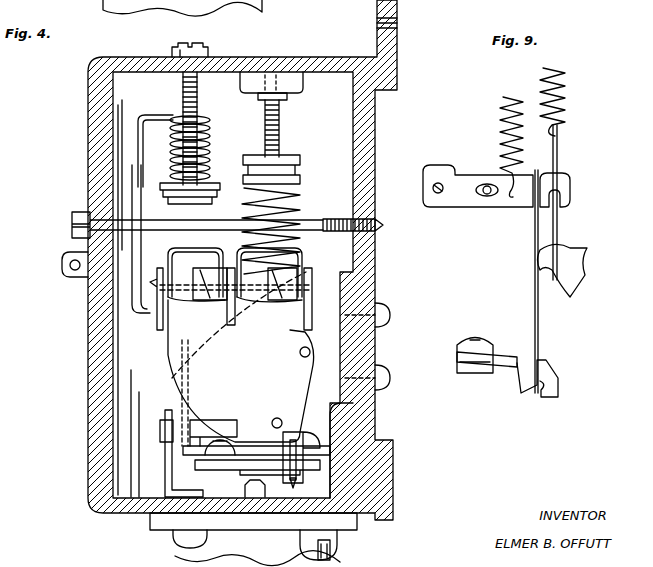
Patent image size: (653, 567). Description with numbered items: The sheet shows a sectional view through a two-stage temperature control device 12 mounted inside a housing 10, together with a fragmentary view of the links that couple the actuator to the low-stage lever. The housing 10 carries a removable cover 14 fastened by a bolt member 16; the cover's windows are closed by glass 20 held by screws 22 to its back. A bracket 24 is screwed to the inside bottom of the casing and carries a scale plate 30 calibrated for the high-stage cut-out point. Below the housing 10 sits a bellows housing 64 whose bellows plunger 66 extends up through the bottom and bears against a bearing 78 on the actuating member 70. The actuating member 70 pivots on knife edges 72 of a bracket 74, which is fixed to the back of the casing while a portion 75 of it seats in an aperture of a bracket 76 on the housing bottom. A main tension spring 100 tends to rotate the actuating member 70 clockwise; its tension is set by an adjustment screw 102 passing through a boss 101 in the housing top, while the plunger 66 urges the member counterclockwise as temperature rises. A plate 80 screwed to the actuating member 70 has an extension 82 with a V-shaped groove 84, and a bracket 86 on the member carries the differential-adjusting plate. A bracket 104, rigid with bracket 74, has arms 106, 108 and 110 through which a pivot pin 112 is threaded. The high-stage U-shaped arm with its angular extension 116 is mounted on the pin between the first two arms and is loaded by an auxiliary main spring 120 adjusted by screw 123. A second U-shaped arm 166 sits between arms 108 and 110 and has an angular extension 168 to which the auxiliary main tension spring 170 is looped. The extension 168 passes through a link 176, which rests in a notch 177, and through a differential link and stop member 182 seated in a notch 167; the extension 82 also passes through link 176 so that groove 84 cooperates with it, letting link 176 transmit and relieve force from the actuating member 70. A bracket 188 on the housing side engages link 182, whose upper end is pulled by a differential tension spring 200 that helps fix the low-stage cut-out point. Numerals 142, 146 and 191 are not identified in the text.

In FIG. 4, the housing 10 is at (95, 404).
In FIG. 4, the control device 12 is at (346, 156).
In FIG. 4, the removable cover 14 is at (167, 252).
In FIG. 4, the bolt member 16 is at (72, 221).
In FIG. 4, the glass 20 is at (114, 302).
In FIG. 4, the screws 22 is at (120, 167).
In FIG. 4, the bracket 24 is at (146, 512).
In FIG. 4, the scale plate 30 is at (138, 370).
In FIG. 4, the bellows housing 64 is at (331, 550).
In FIG. 4, the bellows plunger 66 is at (250, 488).
In FIG. 4, the actuating member 70 is at (226, 447).
In FIG. 9, the actuating member 70 is at (466, 370).
In FIG. 4, the knife edges 72 is at (196, 440).
In FIG. 4, the bracket 74 is at (341, 362).
In FIG. 4, the bracket portion 75 is at (160, 430).
In FIG. 4, the bracket 76 is at (168, 476).
In FIG. 4, the bearing 78 is at (236, 470).
In FIG. 4, the plate 80 is at (262, 431).
In FIG. 9, the plate 80 is at (505, 354).
In FIG. 4, the extension 82 is at (300, 484).
In FIG. 9, the extension 82 is at (545, 378).
In FIG. 9, the V-shaped groove 84 is at (541, 400).
In FIG. 4, the bracket 86 is at (180, 392).
In FIG. 4, the main tension spring 100 is at (301, 188).
In FIG. 4, the boss 101 is at (301, 86).
In FIG. 4, the adjustment screw 102 is at (281, 126).
In FIG. 4, the bracket 104 is at (241, 359).
In FIG. 4, the arm 106 is at (164, 302).
In FIG. 4, the arm 108 is at (229, 326).
In FIG. 4, the arm 110 is at (313, 311).
In FIG. 4, the pivot pin 112 is at (305, 283).
In FIG. 9, the pivot pin 112 is at (437, 195).
In FIG. 4, the angular extension 116 is at (211, 291).
In FIG. 4, the auxiliary main spring 120 is at (216, 188).
In FIG. 4, the adjustment screw 123 is at (204, 46).
In FIG. 4, the spring 142 is at (206, 148).
In FIG. 4, the tube 146 is at (160, 113).
In FIG. 4, the U-shaped arm 166 is at (318, 227).
In FIG. 9, the U-shaped arm 166 is at (442, 172).
In FIG. 9, the notch 167 is at (561, 205).
In FIG. 4, the angular extension 168 is at (290, 268).
In FIG. 9, the angular extension 168 is at (566, 182).
In FIG. 9, the auxiliary main tension spring 170 is at (500, 118).
In FIG. 4, the link 176 is at (305, 470).
In FIG. 9, the link 176 is at (540, 319).
In FIG. 9, the notch 177 is at (536, 170).
In FIG. 9, the differential link and stop member 182 is at (560, 146).
In FIG. 9, the bracket 188 is at (576, 260).
In FIG. 9, the slot 191 is at (488, 197).
In FIG. 9, the differential tension spring 200 is at (566, 86).